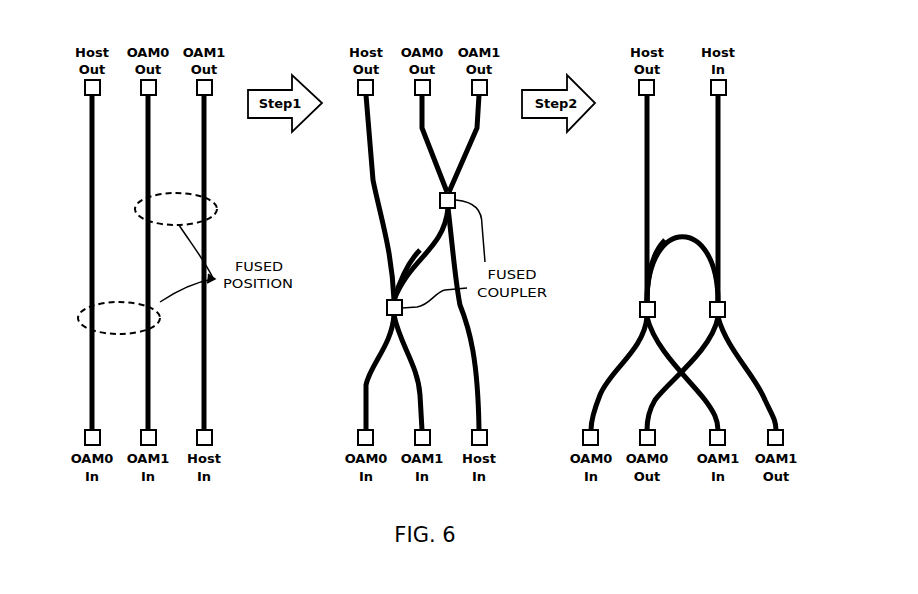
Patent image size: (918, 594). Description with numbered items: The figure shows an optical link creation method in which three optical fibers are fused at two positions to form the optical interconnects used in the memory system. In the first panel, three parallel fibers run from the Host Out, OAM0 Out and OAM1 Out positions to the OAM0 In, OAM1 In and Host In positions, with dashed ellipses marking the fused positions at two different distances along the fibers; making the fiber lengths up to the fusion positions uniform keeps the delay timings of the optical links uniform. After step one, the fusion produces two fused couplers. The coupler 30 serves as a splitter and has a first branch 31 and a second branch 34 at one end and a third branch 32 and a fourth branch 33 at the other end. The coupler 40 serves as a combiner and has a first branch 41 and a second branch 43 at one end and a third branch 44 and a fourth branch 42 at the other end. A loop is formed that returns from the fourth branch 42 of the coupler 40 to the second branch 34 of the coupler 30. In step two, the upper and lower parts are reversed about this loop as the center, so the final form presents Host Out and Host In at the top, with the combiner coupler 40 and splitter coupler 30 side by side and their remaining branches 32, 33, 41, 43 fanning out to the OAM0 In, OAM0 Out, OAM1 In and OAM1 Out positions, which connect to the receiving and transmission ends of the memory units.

The coupler 30 is at (508, 310).
The first branch 31 is at (506, 198).
The third branch 32 is at (506, 372).
The fourth branch 33 is at (556, 372).
The second branch 34 is at (534, 271).
The coupler 40 is at (584, 256).
The first branch 41 is at (567, 262).
The fourth branch 42 is at (556, 255).
The second branch 43 is at (612, 262).
The third branch 44 is at (596, 262).